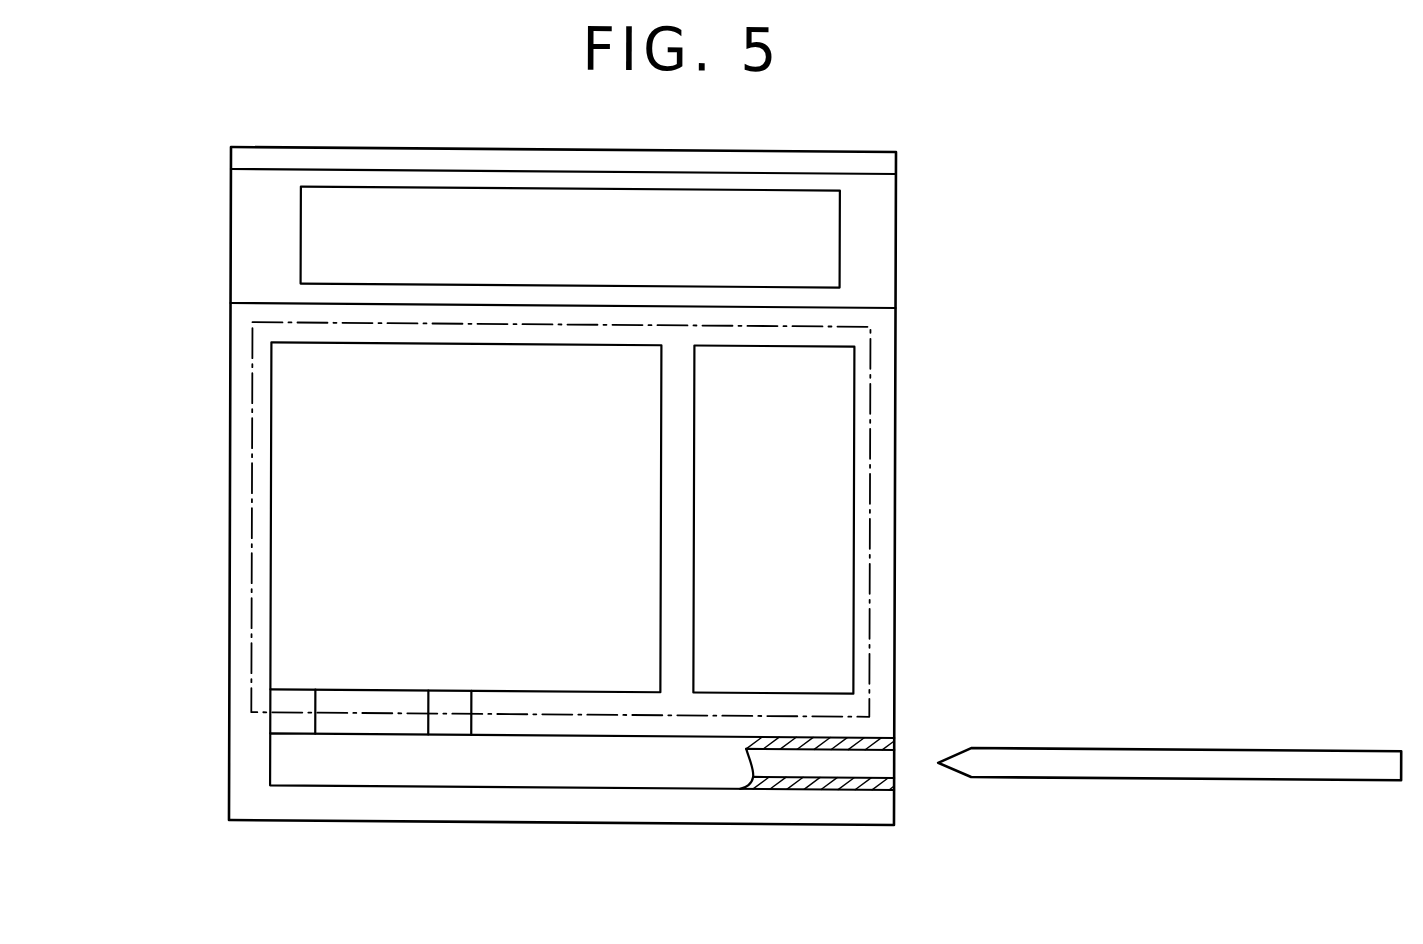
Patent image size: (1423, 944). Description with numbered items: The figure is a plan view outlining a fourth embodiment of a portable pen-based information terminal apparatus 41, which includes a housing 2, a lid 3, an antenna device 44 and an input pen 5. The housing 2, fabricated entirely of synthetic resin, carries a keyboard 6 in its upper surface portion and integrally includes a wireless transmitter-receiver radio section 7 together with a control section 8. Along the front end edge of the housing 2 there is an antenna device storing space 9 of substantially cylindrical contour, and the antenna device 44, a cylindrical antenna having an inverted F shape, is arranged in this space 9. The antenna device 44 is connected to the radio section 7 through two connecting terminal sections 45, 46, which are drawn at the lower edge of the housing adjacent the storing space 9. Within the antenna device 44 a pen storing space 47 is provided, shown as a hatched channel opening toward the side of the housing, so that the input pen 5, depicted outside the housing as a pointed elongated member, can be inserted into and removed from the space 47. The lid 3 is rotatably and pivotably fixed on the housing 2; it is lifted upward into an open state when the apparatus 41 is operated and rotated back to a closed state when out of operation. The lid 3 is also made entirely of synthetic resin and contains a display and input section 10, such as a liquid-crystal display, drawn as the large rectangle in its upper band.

The housing 2 is at (239, 355).
The lid 3 is at (264, 195).
The input pen 5 is at (1180, 753).
The keyboard 6 is at (872, 380).
The radio section 7 is at (292, 509).
The control section 8 is at (840, 493).
The antenna device storing space 9 is at (685, 767).
The display and input section 10 is at (670, 207).
The portable pen-based information terminal apparatus 41 is at (995, 223).
The antenna device 44 is at (565, 773).
The connecting terminal section 45 is at (297, 700).
The connecting terminal section 46 is at (453, 727).
The pen storing space 47 is at (870, 752).